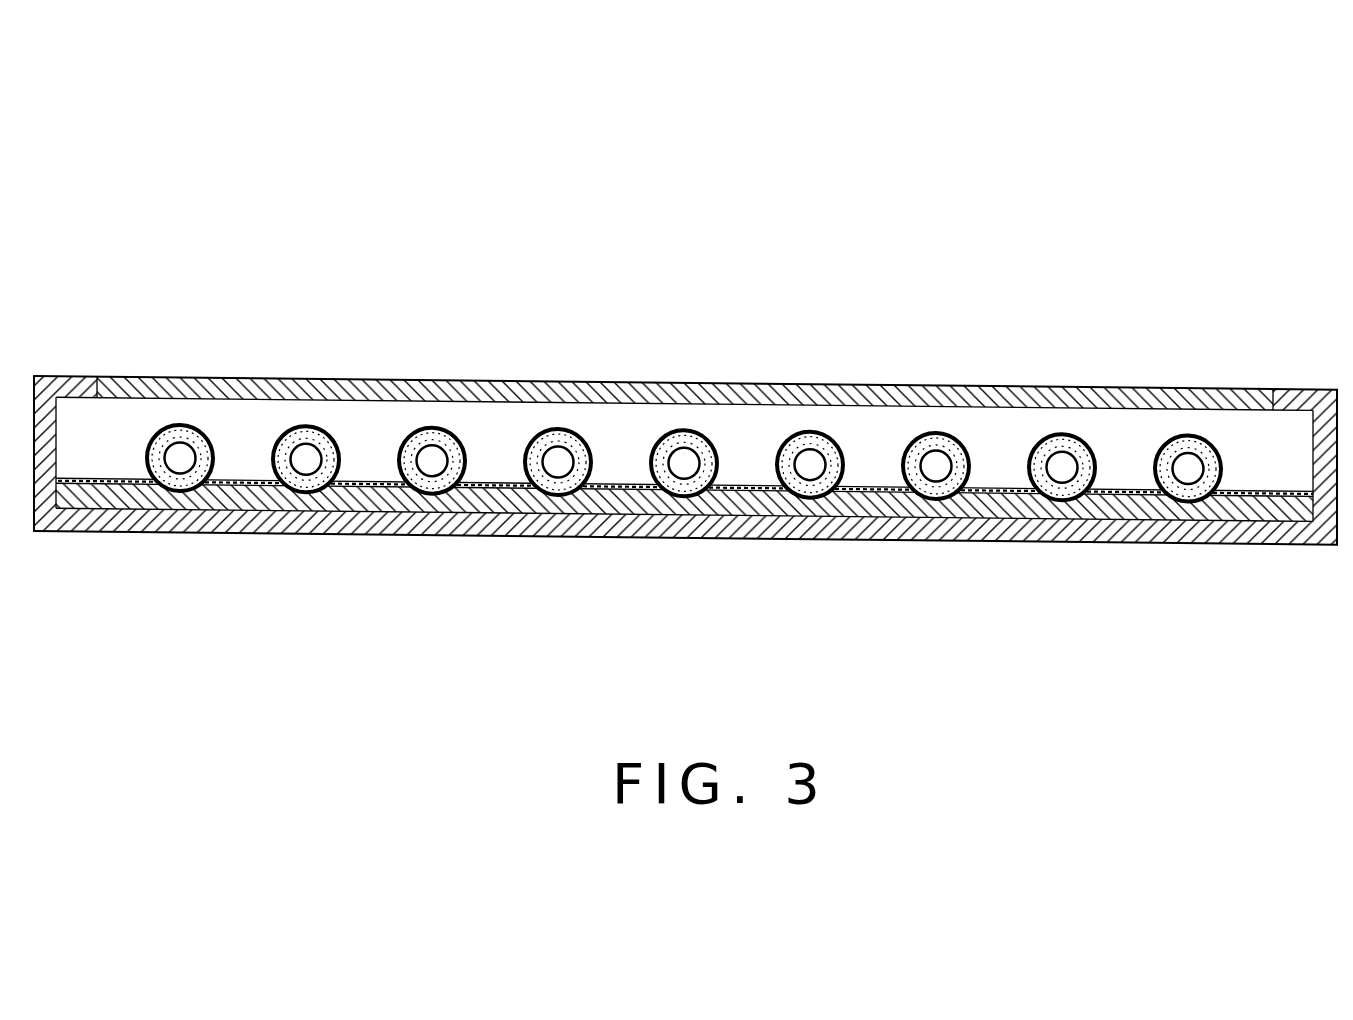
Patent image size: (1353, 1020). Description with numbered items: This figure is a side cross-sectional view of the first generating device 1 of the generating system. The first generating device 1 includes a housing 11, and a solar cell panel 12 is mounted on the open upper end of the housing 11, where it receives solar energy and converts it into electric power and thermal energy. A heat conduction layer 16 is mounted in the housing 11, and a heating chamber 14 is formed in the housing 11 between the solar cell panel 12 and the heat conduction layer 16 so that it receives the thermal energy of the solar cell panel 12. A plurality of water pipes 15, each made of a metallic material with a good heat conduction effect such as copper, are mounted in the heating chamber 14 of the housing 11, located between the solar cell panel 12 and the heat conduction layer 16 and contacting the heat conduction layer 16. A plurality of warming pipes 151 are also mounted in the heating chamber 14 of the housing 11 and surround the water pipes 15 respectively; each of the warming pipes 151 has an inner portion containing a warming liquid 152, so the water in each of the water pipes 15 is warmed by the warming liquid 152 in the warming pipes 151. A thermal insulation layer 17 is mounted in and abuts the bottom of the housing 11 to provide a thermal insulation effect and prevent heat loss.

The first generating device 1 is at (782, 158).
The housing 11 is at (1315, 392).
The solar cell panel 12 is at (1125, 398).
The heating chamber 14 is at (1140, 452).
The water pipes 15 is at (684, 446).
The warming pipes 151 is at (900, 447).
The warming liquid 152 is at (933, 433).
The heat conduction layer 16 is at (614, 484).
The thermal insulation layer 17 is at (488, 517).